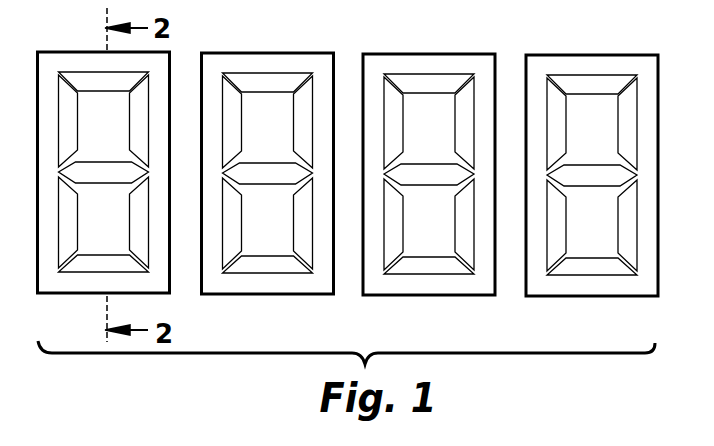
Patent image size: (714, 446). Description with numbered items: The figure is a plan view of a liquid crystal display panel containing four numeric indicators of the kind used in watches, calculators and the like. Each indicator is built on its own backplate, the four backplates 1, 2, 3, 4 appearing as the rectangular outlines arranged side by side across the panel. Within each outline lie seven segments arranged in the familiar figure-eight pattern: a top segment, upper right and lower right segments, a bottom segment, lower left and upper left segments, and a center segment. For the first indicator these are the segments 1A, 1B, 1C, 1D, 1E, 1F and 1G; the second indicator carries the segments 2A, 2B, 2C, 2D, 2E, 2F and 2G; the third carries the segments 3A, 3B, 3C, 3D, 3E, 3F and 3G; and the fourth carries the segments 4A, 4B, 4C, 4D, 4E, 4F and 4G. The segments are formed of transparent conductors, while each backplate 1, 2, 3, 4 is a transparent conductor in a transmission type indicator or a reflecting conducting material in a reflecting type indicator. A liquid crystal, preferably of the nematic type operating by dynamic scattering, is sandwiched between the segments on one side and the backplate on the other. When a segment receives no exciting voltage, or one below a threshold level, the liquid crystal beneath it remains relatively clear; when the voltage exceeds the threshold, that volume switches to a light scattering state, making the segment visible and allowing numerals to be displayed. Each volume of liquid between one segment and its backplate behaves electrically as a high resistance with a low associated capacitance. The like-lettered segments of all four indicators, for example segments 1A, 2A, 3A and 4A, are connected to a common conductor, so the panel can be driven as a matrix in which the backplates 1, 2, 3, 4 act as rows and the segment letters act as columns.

The backplate 1 is at (63, 52).
The backplate 2 is at (250, 53).
The backplate 3 is at (450, 54).
The backplate 4 is at (615, 55).
The segment 1A is at (104, 81).
The segment 1B is at (139, 121).
The segment 1C is at (139, 222).
The segment 1D is at (104, 263).
The segment 1E is at (68, 222).
The segment 1F is at (68, 121).
The segment 1G is at (104, 172).
The segment 2A is at (268, 82).
The segment 2B is at (303, 122).
The segment 2C is at (303, 223).
The segment 2D is at (268, 264).
The segment 2E is at (232, 223).
The segment 2F is at (232, 122).
The segment 2G is at (268, 173).
The segment 3A is at (429, 83).
The segment 3B is at (464, 123).
The segment 3C is at (464, 224).
The segment 3D is at (429, 265).
The segment 3E is at (393, 224).
The segment 3F is at (393, 123).
The segment 3G is at (429, 174).
The segment 4A is at (592, 84).
The segment 4B is at (627, 124).
The segment 4C is at (627, 225).
The segment 4D is at (592, 266).
The segment 4E is at (556, 225).
The segment 4F is at (556, 124).
The segment 4G is at (592, 175).